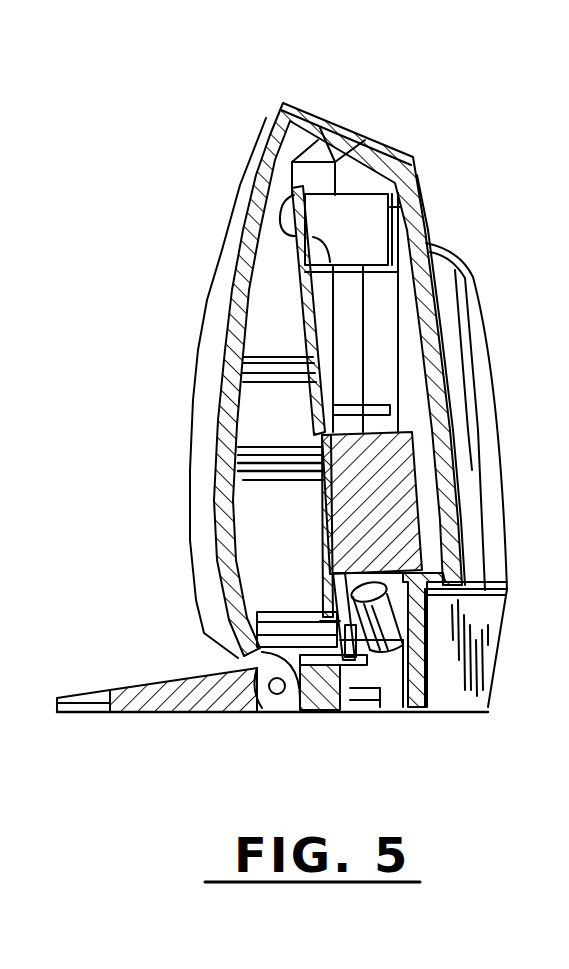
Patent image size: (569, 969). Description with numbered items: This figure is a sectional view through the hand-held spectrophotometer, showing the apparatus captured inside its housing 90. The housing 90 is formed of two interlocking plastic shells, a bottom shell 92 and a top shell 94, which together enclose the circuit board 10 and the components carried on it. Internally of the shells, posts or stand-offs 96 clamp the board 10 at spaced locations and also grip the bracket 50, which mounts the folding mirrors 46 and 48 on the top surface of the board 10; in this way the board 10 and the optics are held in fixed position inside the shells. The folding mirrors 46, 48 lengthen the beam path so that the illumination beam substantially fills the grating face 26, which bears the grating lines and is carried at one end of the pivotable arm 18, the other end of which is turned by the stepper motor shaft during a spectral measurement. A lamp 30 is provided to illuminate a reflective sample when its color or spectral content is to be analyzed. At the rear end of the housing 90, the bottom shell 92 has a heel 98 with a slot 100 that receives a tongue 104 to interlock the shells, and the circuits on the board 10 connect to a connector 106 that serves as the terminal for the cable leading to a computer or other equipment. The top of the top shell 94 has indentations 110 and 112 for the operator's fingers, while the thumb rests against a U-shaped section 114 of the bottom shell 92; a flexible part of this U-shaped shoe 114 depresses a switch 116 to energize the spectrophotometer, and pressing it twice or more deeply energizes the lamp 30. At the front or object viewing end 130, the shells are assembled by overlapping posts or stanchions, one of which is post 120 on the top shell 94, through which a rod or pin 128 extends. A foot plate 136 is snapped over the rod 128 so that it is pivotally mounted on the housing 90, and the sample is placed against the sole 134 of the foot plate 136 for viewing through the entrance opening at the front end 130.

The circuit board 10 is at (240, 328).
The arm 18 is at (245, 386).
The grating face 26 is at (398, 494).
The lamp 30 is at (386, 655).
The folding mirror 46 is at (290, 243).
The folding mirror 48 is at (282, 190).
The bracket 50 is at (370, 147).
The housing 90 is at (508, 229).
The bottom shell 92 is at (476, 303).
The top shell 94 is at (190, 522).
The posts or stand-offs 96 is at (410, 196).
The heel 98 is at (403, 152).
The slot 100 is at (350, 140).
The tongue 104 is at (311, 132).
The connector 106 is at (320, 713).
The indentation 110 is at (190, 430).
The indentation 112 is at (216, 284).
The U-shaped section 114 is at (493, 353).
The switch 116 is at (498, 640).
The post or stanchion 120 is at (283, 713).
The rod or pin 128 is at (256, 713).
The front or object viewing end 130 is at (410, 713).
The sole 134 is at (140, 715).
The foot plate 136 is at (187, 683).